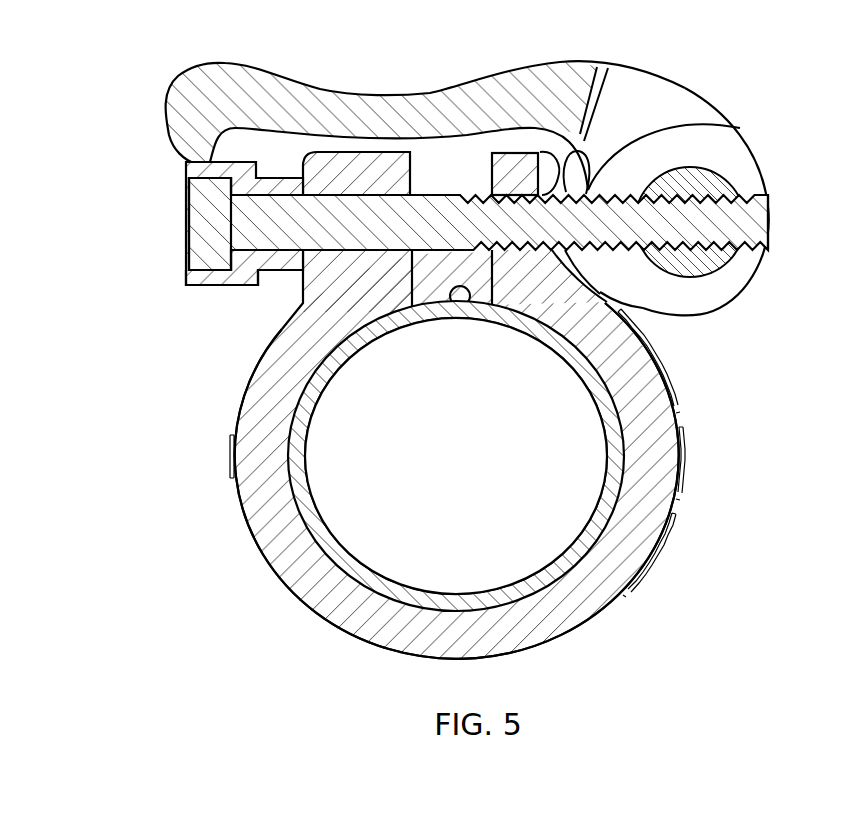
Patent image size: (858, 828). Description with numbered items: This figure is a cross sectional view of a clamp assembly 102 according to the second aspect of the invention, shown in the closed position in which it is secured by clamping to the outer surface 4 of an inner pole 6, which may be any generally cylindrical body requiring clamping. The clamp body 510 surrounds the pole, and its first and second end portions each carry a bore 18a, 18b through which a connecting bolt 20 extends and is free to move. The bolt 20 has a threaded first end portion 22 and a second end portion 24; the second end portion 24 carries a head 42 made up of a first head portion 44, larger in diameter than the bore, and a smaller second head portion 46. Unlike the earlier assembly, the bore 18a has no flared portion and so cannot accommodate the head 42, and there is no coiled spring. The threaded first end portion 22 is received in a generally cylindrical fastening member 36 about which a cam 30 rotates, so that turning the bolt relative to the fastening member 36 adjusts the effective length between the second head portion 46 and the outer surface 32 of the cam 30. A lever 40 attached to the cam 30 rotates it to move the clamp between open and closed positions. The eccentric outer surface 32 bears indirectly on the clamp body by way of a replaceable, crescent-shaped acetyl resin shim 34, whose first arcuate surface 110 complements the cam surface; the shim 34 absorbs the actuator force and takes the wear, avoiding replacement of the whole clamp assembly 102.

The outer surface 4 is at (460, 305).
The inner pole 6 is at (552, 572).
The bore 18a is at (412, 196).
The bore 18b is at (540, 190).
The bolt 20 is at (478, 232).
The first end portion 22 is at (745, 222).
The second end portion 24 is at (268, 222).
The cam 30 is at (700, 292).
The outer surface 32 is at (643, 312).
The shim 34 is at (582, 187).
The fastening member 36 is at (700, 183).
The lever 40 is at (470, 100).
The head 42 is at (171, 195).
The first head portion 44 is at (218, 282).
The second head portion 46 is at (281, 265).
The clamp assembly 102 is at (703, 529).
The first arcuate surface 110 is at (585, 190).
The clamp body 510 is at (268, 514).